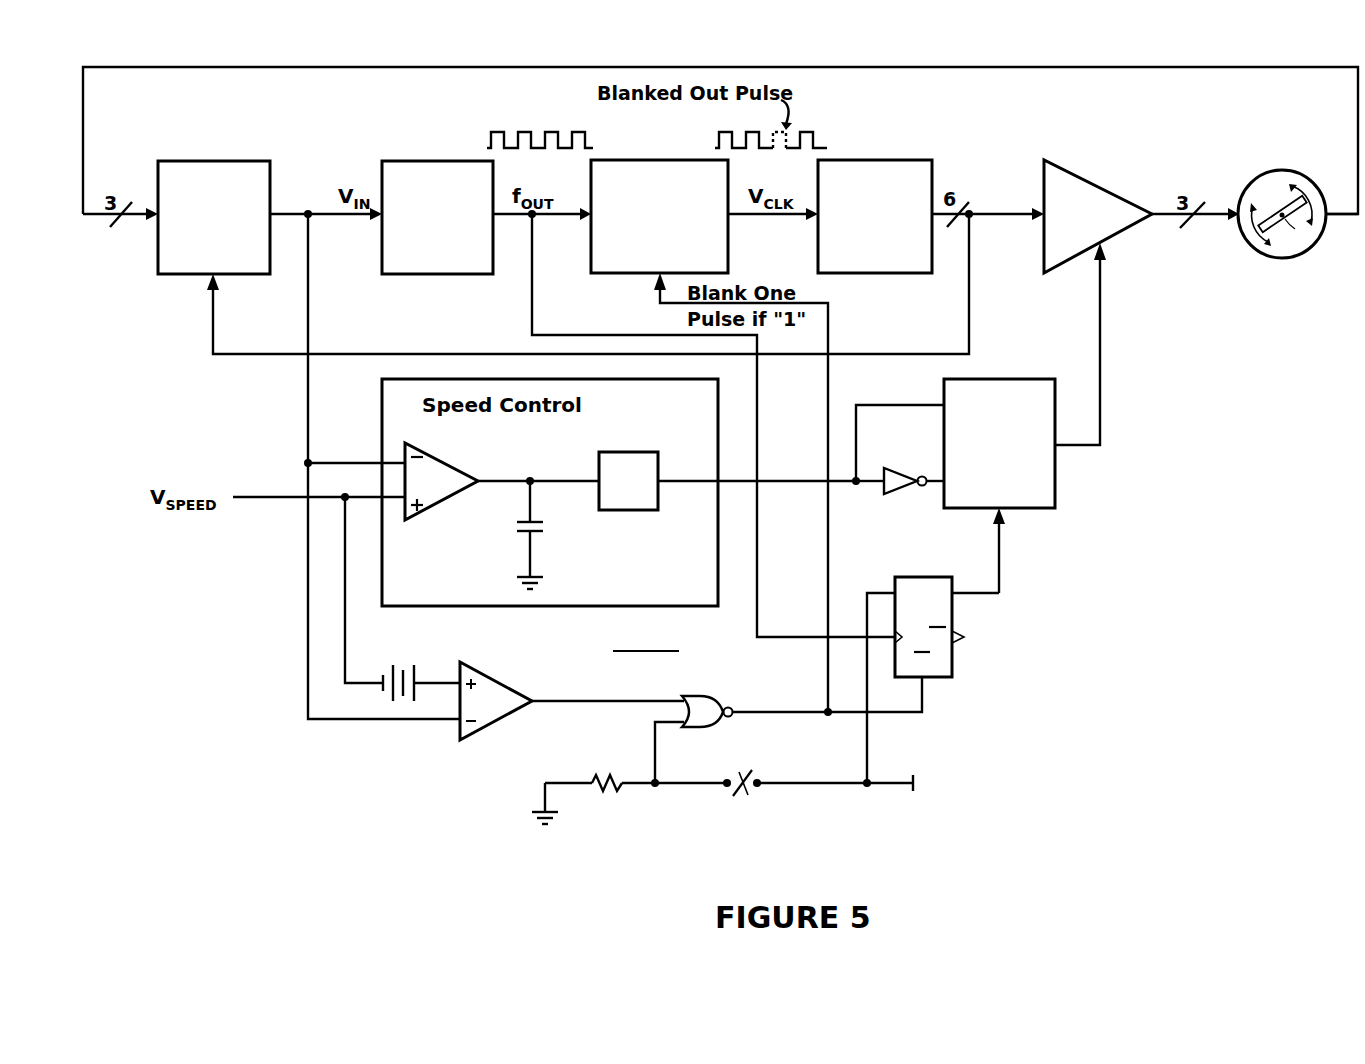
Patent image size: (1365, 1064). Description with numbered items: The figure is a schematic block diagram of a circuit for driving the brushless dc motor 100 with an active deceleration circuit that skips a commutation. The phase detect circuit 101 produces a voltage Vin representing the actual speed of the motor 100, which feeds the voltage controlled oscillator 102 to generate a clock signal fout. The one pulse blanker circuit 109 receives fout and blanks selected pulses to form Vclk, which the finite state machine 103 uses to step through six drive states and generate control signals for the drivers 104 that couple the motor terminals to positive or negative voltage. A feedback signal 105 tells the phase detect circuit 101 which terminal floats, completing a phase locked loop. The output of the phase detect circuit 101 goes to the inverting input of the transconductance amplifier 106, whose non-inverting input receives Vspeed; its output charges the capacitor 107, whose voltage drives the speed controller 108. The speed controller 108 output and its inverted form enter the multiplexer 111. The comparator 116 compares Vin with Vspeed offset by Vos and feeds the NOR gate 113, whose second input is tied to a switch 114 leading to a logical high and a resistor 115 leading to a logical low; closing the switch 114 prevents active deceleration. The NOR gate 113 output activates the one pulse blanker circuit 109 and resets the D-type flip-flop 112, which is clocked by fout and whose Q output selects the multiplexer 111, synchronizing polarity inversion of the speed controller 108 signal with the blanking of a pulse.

The brushless dc motor 100 is at (1235, 236).
The phase detect circuit 101 is at (185, 280).
The voltage controlled oscillator 102 is at (440, 283).
The finite state machine 103 is at (874, 283).
The drivers 104 is at (1093, 180).
The feedback signal 105 is at (341, 349).
The transconductance amplifier 106 is at (467, 466).
The capacitor 107 is at (552, 530).
The speed controller 108 is at (627, 448).
The one pulse blanker circuit 109 is at (625, 276).
The multiplexer 111 is at (1003, 376).
The D-type flip-flop 112 is at (965, 614).
The NOR gate 113 is at (702, 691).
The switch 114 is at (747, 793).
The resistor 115 is at (601, 773).
The comparator 116 is at (453, 737).